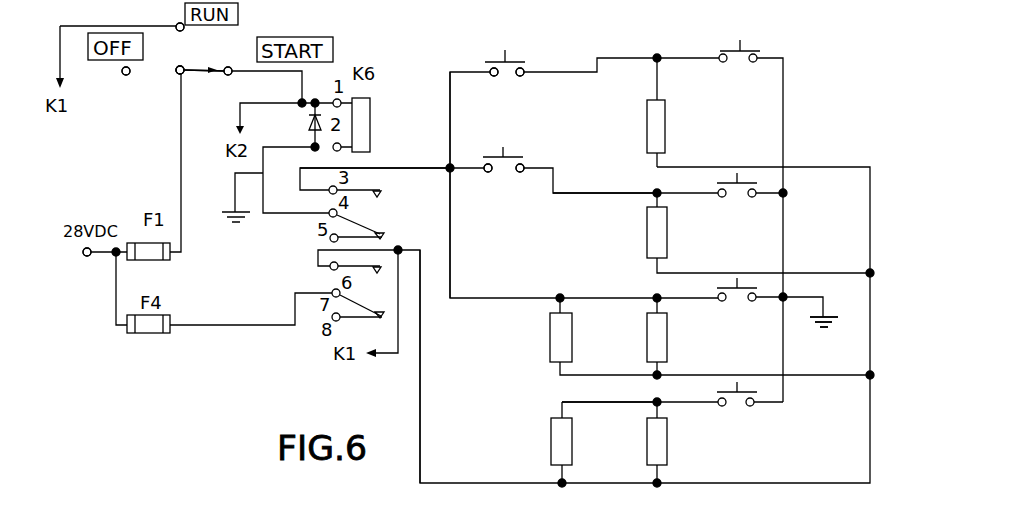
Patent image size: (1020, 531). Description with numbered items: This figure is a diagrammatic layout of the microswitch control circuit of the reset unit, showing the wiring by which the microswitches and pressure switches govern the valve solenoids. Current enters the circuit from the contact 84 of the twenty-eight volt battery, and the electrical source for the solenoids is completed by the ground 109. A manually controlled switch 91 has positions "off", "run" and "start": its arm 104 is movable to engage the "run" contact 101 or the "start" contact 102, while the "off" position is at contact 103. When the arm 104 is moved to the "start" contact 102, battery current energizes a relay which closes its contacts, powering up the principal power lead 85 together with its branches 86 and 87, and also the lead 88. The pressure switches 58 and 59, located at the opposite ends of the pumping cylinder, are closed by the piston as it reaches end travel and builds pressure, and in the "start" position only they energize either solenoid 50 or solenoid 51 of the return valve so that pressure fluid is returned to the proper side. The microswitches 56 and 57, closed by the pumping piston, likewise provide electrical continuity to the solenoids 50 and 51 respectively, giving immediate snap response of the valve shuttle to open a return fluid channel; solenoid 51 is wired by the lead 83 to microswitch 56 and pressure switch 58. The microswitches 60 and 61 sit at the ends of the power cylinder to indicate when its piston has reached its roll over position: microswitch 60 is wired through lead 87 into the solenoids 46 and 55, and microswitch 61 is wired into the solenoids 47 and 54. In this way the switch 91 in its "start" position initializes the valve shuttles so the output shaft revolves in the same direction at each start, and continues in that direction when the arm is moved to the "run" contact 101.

The run contact 101 is at (178, 23).
The switch 91 is at (203, 60).
The start contact 102 is at (231, 74).
The off contact 103 is at (126, 75).
The switch arm 104 is at (184, 74).
The battery supply contact 84 is at (84, 254).
The principal power lead 85 is at (428, 167).
The branch lead 86 is at (450, 97).
The branch lead 87 is at (450, 210).
The lead 88 is at (420, 375).
The lead 83 is at (583, 195).
The solenoid 50 is at (647, 133).
The solenoid 51 is at (647, 232).
The solenoid 55 is at (550, 335).
The solenoid 46 is at (647, 335).
The solenoid 54 is at (551, 447).
The solenoid 47 is at (647, 450).
The microswitch 56 is at (757, 181).
The microswitch 57 is at (759, 42).
The pressure switch 58 is at (530, 152).
The pressure switch 59 is at (530, 53).
The microswitch 60 is at (757, 287).
The microswitch 61 is at (760, 392).
The ground 109 is at (823, 335).